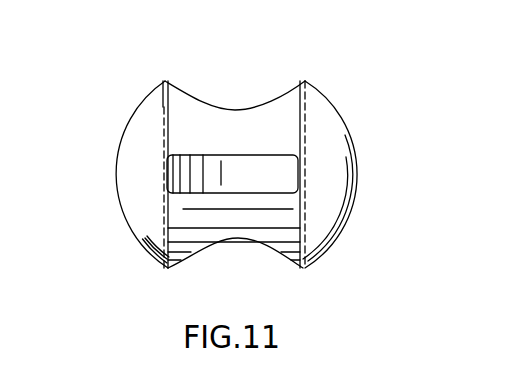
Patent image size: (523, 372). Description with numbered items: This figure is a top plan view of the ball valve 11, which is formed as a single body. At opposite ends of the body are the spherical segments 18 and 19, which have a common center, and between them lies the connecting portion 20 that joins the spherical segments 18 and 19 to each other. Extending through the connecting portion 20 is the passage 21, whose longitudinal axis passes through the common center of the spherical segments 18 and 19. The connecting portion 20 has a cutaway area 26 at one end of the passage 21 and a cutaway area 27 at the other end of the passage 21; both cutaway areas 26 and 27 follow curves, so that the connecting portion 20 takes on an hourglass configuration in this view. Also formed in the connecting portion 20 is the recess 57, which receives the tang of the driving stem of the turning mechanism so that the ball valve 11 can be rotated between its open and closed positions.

The ball valve 11 is at (345, 221).
The spherical segment 18 is at (357, 181).
The spherical segment 19 is at (115, 182).
The connecting portion 20 is at (282, 108).
The passage 21 is at (166, 107).
The cutaway area 26 is at (263, 247).
The cutaway area 27 is at (247, 109).
The recess 57 is at (298, 162).